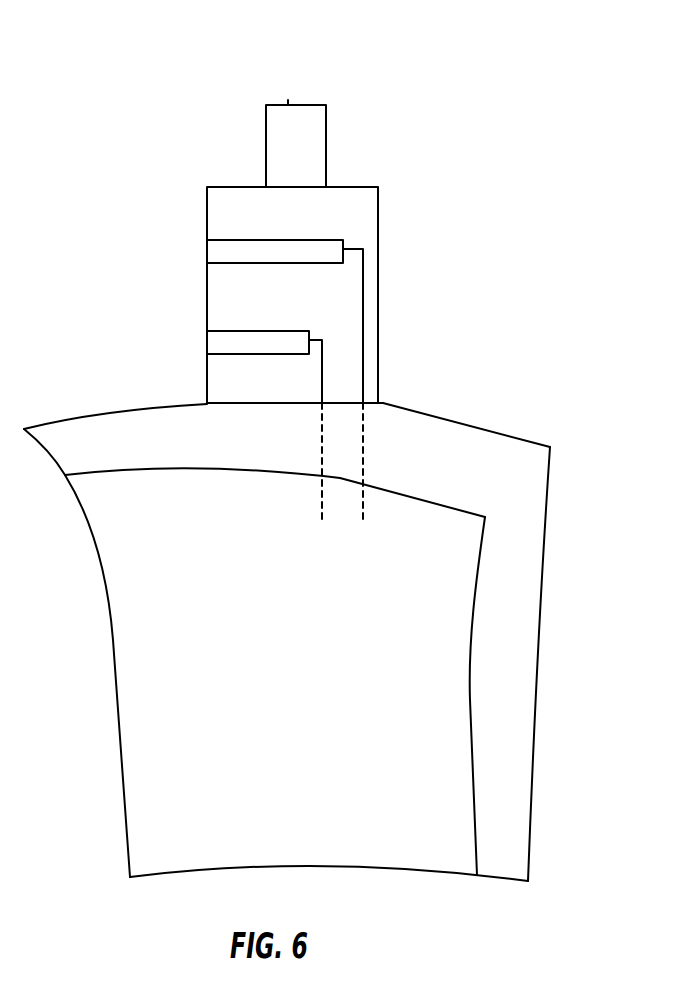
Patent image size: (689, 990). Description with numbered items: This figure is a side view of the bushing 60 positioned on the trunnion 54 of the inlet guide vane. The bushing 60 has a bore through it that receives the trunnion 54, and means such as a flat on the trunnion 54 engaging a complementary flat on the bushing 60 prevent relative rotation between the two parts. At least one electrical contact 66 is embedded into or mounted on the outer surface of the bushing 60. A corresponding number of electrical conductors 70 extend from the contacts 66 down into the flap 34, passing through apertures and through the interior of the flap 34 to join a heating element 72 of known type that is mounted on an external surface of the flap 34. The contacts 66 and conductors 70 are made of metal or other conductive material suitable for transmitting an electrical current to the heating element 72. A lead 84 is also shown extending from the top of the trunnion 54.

The turbine blade 34 is at (507, 433).
The sensor 54 is at (332, 152).
The housing block 60 is at (370, 213).
The slots 66 is at (217, 253).
The passages 70 is at (365, 292).
The airfoil body 72 is at (450, 658).
The lead wire 84 is at (288, 105).